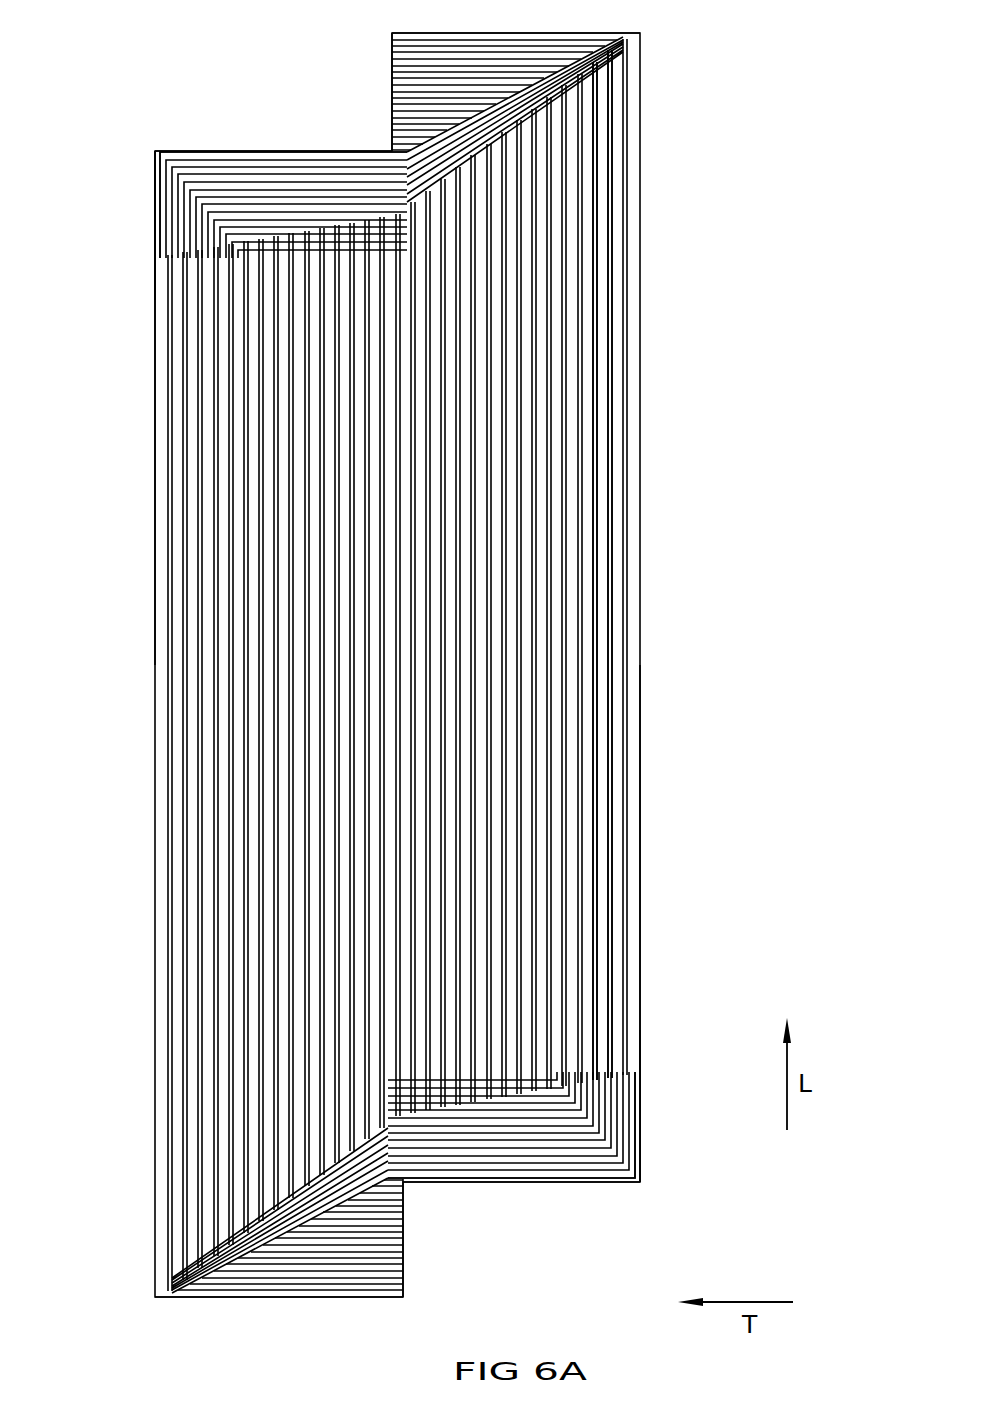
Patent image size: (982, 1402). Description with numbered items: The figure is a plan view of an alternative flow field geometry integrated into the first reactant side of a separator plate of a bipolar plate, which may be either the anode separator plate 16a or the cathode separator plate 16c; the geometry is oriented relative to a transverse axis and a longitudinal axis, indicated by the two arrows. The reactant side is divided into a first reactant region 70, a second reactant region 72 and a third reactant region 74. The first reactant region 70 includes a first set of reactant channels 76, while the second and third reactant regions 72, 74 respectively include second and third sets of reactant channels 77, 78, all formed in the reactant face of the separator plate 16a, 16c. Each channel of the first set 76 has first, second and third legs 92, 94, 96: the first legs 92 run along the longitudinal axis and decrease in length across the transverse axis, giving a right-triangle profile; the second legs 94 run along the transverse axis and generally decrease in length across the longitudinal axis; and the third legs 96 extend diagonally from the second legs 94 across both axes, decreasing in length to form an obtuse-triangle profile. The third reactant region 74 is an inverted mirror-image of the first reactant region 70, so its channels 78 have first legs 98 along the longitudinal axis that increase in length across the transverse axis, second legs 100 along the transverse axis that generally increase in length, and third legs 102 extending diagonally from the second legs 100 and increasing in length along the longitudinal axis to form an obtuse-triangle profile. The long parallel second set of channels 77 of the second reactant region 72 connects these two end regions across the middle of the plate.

The anode separator plate 16a is at (652, 397).
The cathode separator plate 16c is at (497, 665).
The first reactant region 70 is at (627, 1080).
The second reactant region 72 is at (630, 572).
The third reactant region 74 is at (157, 242).
The first set of reactant channels 76 is at (557, 1183).
The second set of reactant channels 77 is at (608, 241).
The third set of reactant channels 78 is at (288, 163).
The first legs 92 is at (632, 1158).
The second legs 94 is at (408, 1172).
The third legs 96 is at (207, 1262).
The first legs 98 is at (157, 180).
The second legs 100 is at (340, 155).
The third legs 102 is at (622, 45).